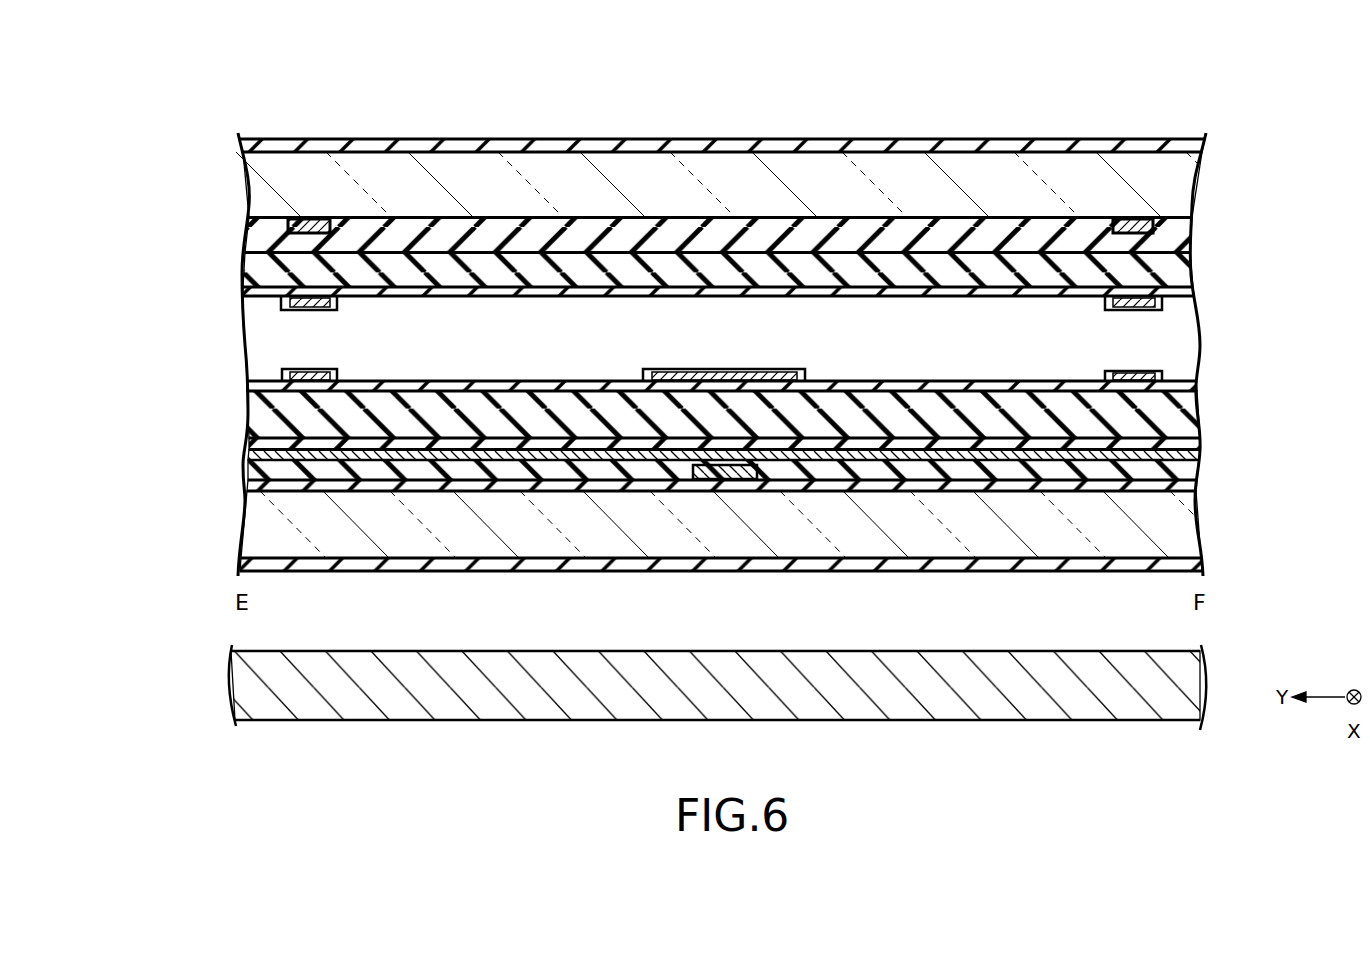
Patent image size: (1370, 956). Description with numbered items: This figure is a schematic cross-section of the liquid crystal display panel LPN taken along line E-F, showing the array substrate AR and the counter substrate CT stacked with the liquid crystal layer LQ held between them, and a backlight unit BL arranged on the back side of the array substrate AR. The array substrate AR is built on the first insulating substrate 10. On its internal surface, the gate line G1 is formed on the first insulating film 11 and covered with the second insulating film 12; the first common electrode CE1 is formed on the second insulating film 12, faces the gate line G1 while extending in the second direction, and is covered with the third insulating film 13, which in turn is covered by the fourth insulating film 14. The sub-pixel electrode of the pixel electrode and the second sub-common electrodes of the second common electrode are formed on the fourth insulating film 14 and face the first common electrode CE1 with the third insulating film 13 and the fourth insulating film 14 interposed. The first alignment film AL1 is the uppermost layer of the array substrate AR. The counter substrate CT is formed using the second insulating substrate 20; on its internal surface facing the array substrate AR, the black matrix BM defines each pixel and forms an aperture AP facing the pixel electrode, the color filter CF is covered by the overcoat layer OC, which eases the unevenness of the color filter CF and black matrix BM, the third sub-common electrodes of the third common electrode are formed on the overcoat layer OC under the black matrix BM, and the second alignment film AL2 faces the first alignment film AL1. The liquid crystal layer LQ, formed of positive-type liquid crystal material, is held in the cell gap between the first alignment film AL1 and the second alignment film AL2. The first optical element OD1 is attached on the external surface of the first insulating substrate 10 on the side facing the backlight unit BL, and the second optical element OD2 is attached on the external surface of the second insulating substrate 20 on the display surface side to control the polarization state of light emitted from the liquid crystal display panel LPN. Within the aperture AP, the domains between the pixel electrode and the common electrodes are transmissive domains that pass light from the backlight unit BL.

The liquid crystal display panel LPN is at (713, 327).
The counter substrate CT is at (713, 221).
The array substrate AR is at (682, 466).
The aperture AP is at (1113, 138).
The second optical element OD2 is at (1205, 146).
The second insulating substrate 20 is at (1192, 172).
The black matrix BM is at (290, 240).
The color filter CF is at (1188, 245).
The overcoat layer OC is at (1190, 270).
The second alignment film AL2 is at (1180, 296).
The liquid crystal layer LQ is at (1190, 350).
The first alignment film AL1 is at (1190, 382).
The fourth insulating film 14 is at (1192, 404).
The third insulating film 13 is at (1198, 440).
The second insulating film 12 is at (1192, 464).
The first insulating film 11 is at (1196, 488).
The first insulating substrate 10 is at (1186, 522).
The gate line G1 is at (725, 481).
The first common electrode CE1 is at (992, 462).
The first optical element OD1 is at (1200, 562).
The backlight unit BL is at (1192, 690).